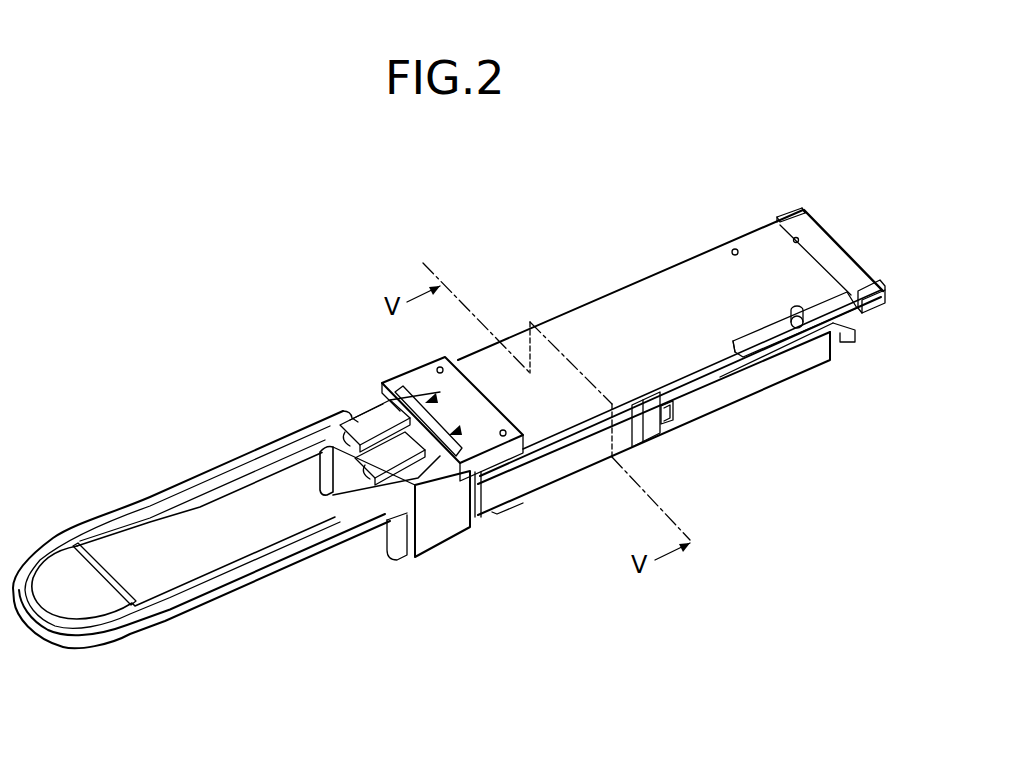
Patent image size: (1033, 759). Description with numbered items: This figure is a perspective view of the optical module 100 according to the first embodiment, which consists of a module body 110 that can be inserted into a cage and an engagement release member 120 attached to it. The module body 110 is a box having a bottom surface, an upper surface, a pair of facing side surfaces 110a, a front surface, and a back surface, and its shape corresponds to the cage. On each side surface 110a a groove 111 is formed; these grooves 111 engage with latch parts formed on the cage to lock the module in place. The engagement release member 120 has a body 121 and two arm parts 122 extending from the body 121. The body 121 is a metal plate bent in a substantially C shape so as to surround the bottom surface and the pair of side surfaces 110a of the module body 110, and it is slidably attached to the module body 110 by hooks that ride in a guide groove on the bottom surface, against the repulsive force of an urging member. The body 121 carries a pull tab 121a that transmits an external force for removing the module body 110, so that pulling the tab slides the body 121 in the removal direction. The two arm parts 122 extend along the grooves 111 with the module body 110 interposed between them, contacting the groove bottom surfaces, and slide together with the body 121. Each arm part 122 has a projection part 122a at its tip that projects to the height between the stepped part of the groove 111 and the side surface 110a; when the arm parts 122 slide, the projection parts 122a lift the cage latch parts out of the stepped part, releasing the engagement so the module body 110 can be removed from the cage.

The optical module 100 is at (708, 192).
The module body 110 is at (604, 277).
The side surface 110a is at (787, 370).
The groove 111 is at (652, 438).
The engagement release member 120 is at (227, 403).
The body 121 is at (452, 525).
The pull tab 121a is at (177, 612).
The arm part 122 is at (537, 483).
The projection part 122a is at (673, 420).